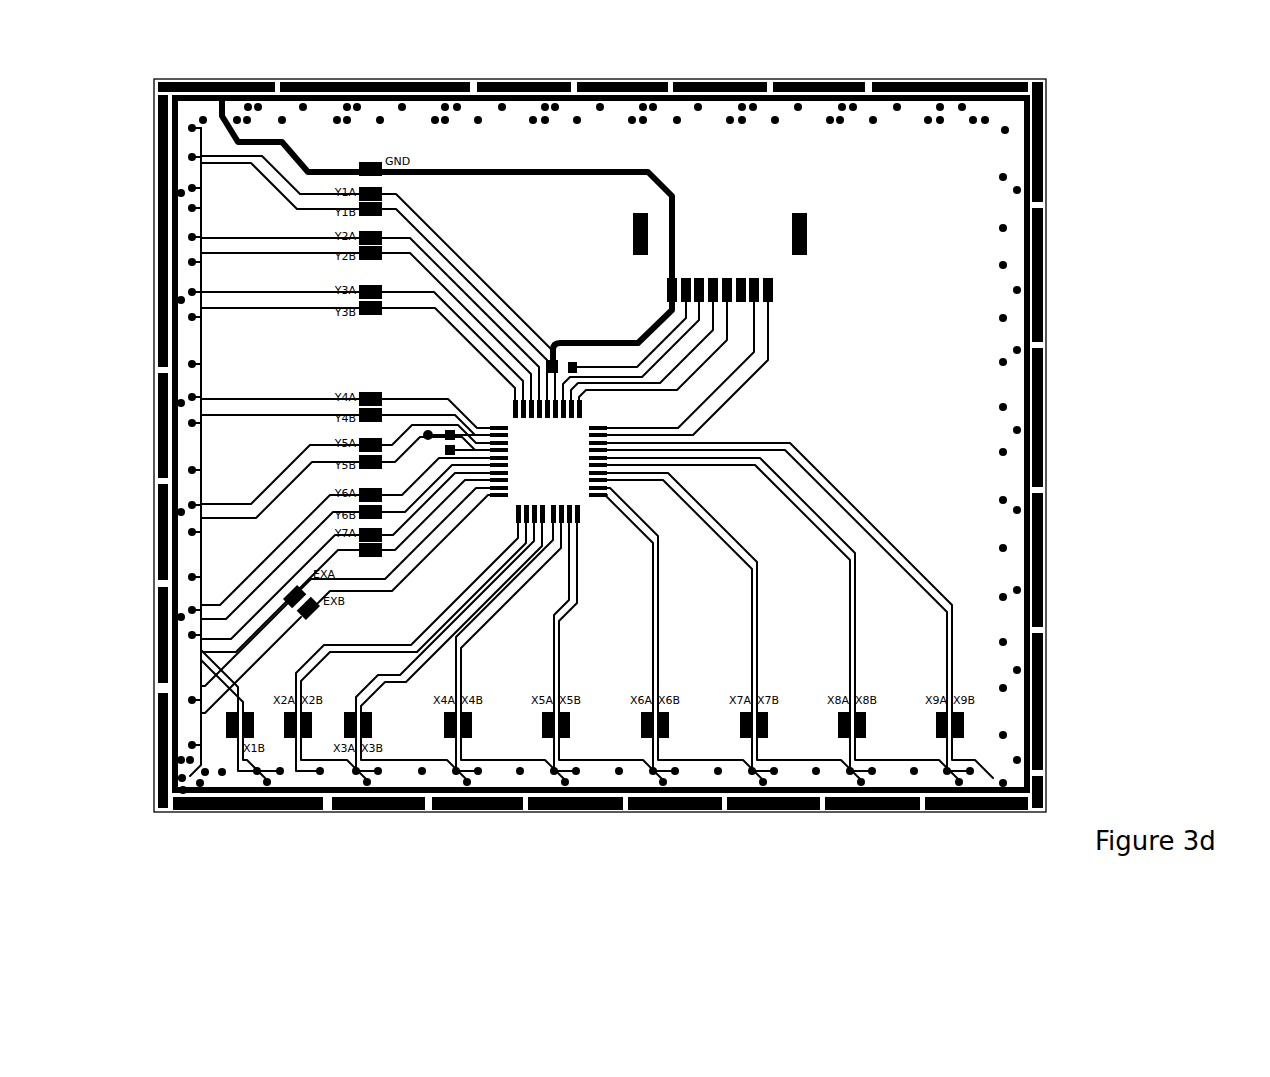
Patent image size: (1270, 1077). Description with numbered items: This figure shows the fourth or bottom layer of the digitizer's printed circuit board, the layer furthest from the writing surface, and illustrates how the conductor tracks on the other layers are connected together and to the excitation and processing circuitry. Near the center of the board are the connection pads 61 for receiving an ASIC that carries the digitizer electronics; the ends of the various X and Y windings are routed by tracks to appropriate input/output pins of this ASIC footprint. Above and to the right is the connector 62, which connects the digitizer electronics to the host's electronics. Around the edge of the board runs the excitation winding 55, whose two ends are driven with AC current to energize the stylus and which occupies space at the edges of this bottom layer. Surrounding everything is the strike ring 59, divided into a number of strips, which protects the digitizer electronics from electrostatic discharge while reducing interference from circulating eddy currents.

The strike ring 59 is at (722, 82).
The excitation winding 55 is at (818, 104).
The connection pads 61 is at (497, 522).
The connector 62 is at (805, 292).